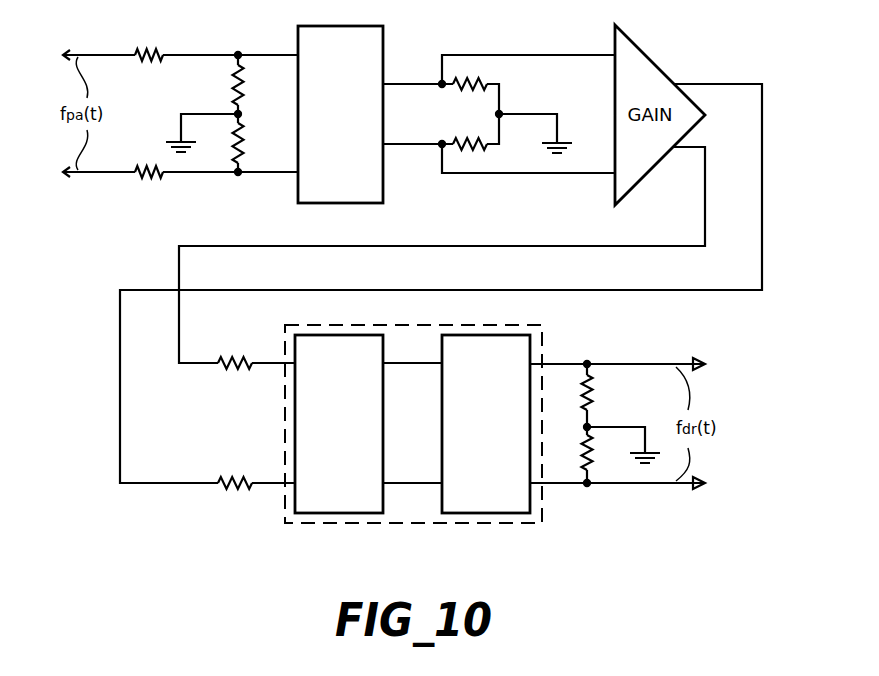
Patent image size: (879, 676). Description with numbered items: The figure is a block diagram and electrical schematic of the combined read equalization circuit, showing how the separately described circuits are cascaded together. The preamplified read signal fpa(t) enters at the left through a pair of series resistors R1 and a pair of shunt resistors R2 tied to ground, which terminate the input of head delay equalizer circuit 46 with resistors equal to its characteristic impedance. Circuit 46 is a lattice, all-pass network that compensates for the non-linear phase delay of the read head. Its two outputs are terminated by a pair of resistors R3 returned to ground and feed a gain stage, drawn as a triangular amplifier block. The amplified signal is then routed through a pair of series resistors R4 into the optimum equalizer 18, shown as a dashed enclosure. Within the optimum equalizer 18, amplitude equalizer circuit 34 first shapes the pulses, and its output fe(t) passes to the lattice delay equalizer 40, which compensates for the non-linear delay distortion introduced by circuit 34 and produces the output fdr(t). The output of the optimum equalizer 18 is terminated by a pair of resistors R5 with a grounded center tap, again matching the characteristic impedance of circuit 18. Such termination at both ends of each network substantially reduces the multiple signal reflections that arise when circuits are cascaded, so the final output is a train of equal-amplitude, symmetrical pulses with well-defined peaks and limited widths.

The optimum equalizer 18 is at (543, 345).
The circuit 34 is at (333, 513).
The lattice delay equalizer 40 is at (482, 513).
The circuit 46 is at (360, 203).
The resistor R1 is at (149, 115).
The resistor R2 is at (220, 114).
The resistor R3 is at (481, 117).
The resistor R4 is at (235, 423).
The resistor R5 is at (571, 423).